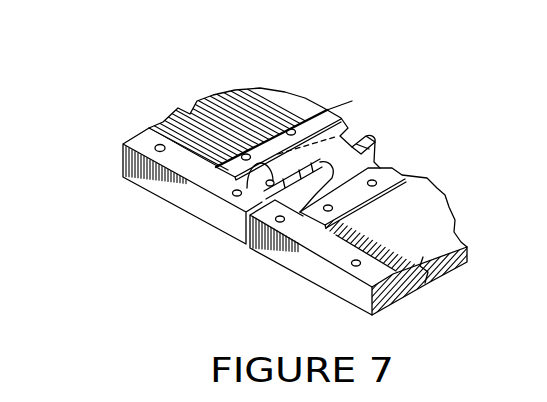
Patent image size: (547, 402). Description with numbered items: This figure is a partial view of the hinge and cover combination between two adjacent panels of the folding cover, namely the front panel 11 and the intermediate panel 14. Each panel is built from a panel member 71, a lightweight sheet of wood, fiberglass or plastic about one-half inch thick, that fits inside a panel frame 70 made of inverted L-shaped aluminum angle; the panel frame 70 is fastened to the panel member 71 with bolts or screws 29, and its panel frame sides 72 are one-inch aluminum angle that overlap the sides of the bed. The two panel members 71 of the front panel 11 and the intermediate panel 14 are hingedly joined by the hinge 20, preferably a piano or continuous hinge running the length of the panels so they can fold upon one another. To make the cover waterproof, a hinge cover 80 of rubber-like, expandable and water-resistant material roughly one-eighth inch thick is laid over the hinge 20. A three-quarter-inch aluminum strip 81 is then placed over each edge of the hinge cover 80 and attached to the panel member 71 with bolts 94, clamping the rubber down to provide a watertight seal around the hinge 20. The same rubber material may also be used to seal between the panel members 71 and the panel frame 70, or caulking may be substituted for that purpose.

The front panel 11 is at (252, 106).
The panel member 71 is at (310, 205).
The intermediate panel 14 is at (437, 238).
The panel frame 70 is at (200, 179).
The panel frame sides 72 is at (292, 252).
The bolts or screws 29 is at (236, 190).
The aluminum strip 81 is at (318, 114).
The bolts 94 is at (246, 154).
The hinge cover 80 is at (350, 158).
The hinge 20 is at (374, 140).